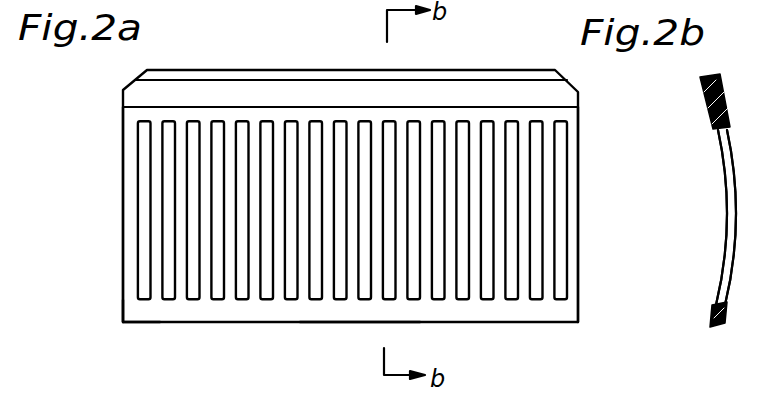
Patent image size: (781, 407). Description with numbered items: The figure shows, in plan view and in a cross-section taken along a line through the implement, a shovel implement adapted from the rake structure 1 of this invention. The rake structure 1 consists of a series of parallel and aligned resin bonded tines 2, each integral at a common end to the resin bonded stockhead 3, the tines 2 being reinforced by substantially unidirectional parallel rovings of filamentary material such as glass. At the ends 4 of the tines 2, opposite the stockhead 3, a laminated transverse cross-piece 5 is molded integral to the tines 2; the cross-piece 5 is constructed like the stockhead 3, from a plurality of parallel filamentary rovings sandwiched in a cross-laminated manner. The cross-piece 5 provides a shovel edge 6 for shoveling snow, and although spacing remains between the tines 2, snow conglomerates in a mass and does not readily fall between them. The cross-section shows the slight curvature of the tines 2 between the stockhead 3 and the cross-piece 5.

In FIG. 2A, the rake structure 1 is at (309, 70).
In FIG. 2B, the rake structure 1 is at (700, 78).
In FIG. 2A, the tines 2 is at (328, 290).
In FIG. 2B, the tines 2 is at (723, 262).
In FIG. 2A, the stockhead 3 is at (410, 87).
In FIG. 2B, the stockhead 3 is at (710, 108).
In FIG. 2A, the ends of the tines 4 is at (123, 218).
In FIG. 2A, the cross-piece 5 is at (148, 310).
In FIG. 2A, the shovel edge 6 is at (358, 323).
In FIG. 2B, the shovel edge 6 is at (712, 327).